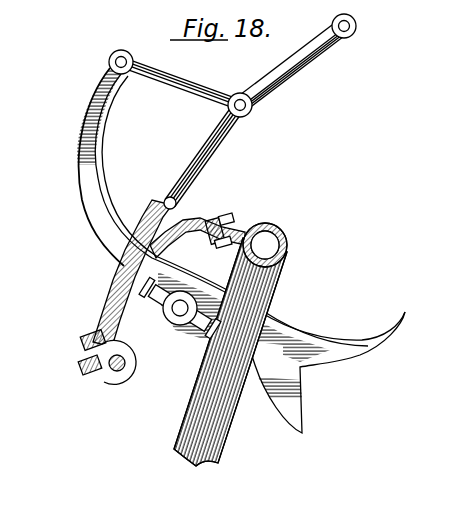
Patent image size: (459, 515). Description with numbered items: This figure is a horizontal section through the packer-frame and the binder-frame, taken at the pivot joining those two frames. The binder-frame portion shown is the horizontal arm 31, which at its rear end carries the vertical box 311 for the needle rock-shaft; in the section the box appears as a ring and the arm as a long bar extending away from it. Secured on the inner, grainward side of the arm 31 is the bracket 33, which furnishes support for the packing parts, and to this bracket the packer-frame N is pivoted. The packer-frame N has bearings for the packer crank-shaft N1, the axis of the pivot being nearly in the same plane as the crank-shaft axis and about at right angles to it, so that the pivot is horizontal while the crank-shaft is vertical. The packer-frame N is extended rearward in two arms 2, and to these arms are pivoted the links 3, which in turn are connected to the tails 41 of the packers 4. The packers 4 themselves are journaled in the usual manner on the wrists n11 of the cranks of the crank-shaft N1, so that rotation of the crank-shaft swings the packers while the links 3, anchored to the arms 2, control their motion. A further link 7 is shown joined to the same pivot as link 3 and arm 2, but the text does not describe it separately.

The packer-frame N is at (118, 277).
The packer crank-shaft N1 is at (126, 364).
The wrists of the cranks n11 is at (178, 311).
The arms of the packer-frame 2 is at (197, 153).
The links 3 is at (180, 83).
The packers 4 is at (265, 353).
The link N7 7 is at (276, 86).
The tail of the packer 41 is at (78, 140).
The bracket 33 is at (197, 229).
The vertical box for the needle rock-shaft 311 is at (284, 240).
The horizontal arm of the binder-frame 31 is at (283, 293).